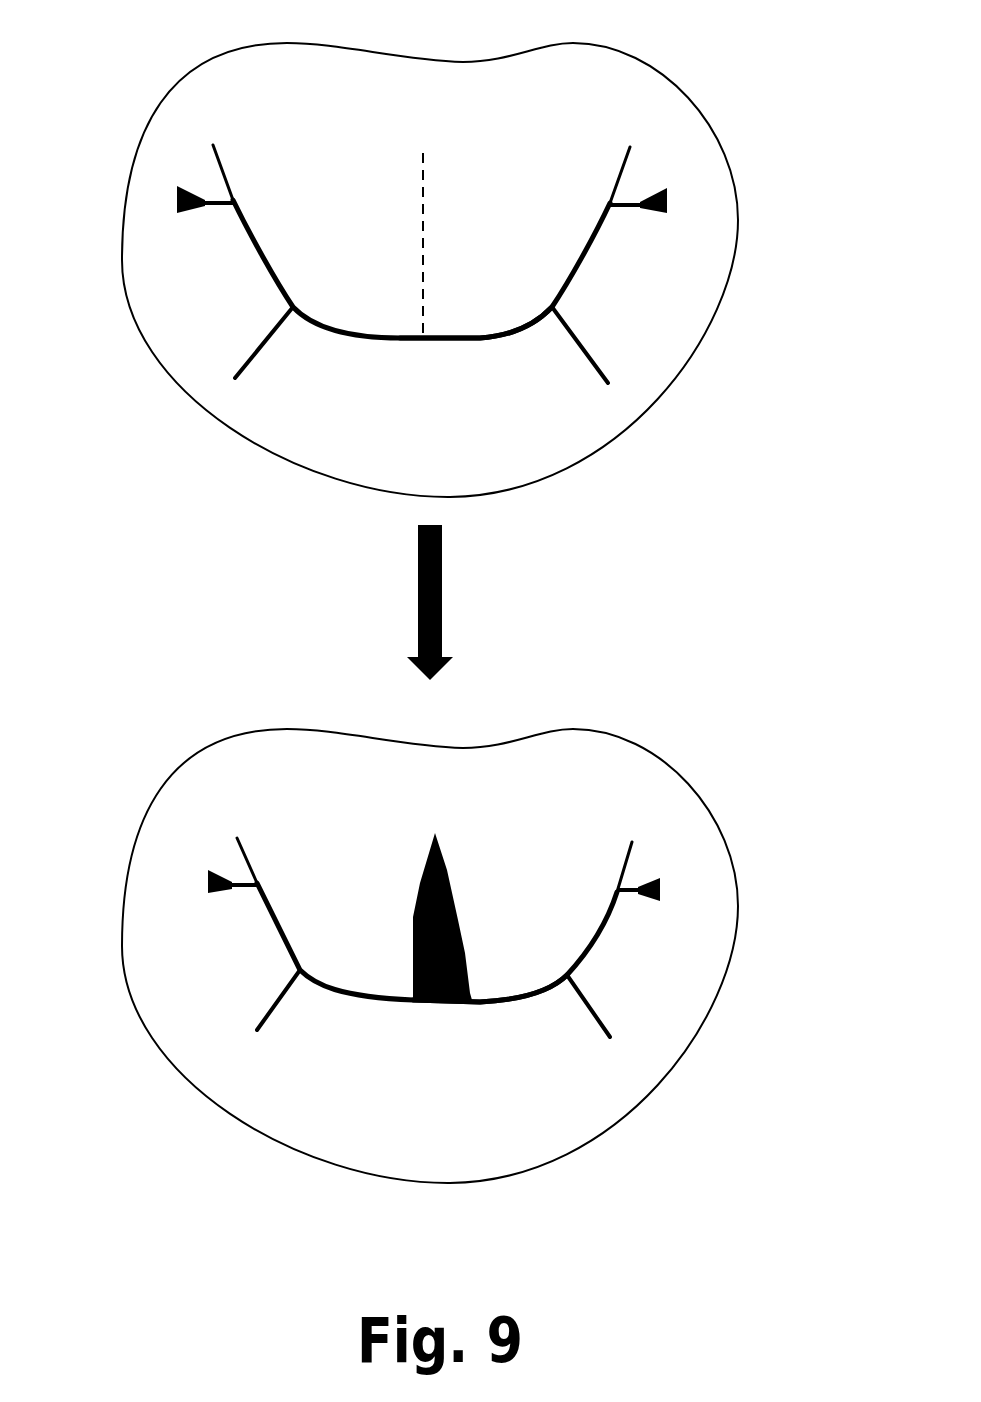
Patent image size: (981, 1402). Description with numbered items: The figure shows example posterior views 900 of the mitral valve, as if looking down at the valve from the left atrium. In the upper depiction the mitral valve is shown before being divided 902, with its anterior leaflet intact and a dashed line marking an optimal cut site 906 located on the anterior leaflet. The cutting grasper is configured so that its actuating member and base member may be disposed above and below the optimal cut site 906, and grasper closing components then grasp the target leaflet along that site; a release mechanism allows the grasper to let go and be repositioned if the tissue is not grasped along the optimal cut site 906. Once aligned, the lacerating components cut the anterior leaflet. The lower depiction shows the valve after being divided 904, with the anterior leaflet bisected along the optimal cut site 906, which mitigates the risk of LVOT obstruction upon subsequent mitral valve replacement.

The posterior views of the mitral valve 900 is at (108, 48).
The mitral valve before being divided 902 is at (412, 46).
The mitral valve after being divided 904 is at (412, 731).
The optimal cut site 906 is at (423, 238).